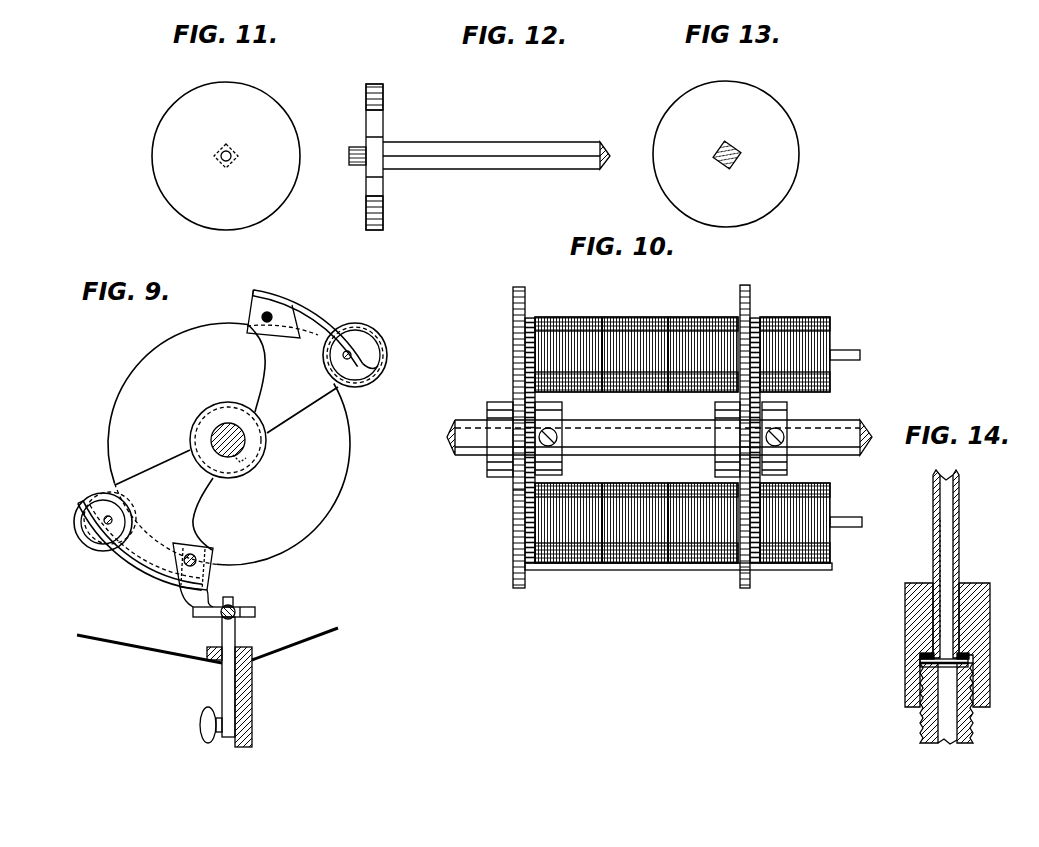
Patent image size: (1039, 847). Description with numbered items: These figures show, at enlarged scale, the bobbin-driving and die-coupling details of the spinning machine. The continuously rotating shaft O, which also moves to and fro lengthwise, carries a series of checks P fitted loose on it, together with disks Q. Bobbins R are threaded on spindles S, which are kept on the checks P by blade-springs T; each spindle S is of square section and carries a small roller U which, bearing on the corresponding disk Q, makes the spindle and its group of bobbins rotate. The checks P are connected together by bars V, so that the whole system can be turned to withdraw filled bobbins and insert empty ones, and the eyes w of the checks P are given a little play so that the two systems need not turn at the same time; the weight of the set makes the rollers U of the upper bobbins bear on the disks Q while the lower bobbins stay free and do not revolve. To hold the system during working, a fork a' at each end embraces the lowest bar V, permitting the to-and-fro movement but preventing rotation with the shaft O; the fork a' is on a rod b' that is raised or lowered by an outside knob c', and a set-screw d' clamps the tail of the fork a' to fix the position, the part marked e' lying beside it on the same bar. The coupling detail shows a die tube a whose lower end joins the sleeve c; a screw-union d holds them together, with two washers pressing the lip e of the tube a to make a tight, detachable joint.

In FIG. 11, the roller U is at (226, 156).
In FIG. 12, the roller U is at (375, 157).
In FIG. 13, the roller U is at (726, 154).
In FIG. 9, the roller U is at (368, 350).
In FIG. 10, the roller U is at (525, 345).
In FIG. 12, the spindle S is at (496, 148).
In FIG. 13, the spindle S is at (730, 163).
In FIG. 9, the spindle S is at (345, 358).
In FIG. 10, the spindle S is at (846, 428).
In FIG. 9, the blade-spring T is at (305, 318).
In FIG. 10, the blade-spring T is at (525, 306).
In FIG. 9, the bar V is at (188, 553).
In FIG. 10, the bar V is at (678, 576).
In FIG. 9, the bobbin R is at (222, 428).
In FIG. 10, the bobbin R is at (682, 428).
In FIG. 9, the shaft O is at (230, 424).
In FIG. 10, the shaft O is at (659, 436).
In FIG. 9, the check P is at (226, 436).
In FIG. 10, the check P is at (618, 541).
In FIG. 9, the disk Q is at (229, 444).
In FIG. 10, the disk Q is at (562, 472).
In FIG. 9, the eye w is at (243, 467).
In FIG. 10, the eye w is at (498, 460).
In FIG. 9, the fork a' is at (215, 612).
In FIG. 9, the rod b' is at (232, 682).
In FIG. 9, the knob c' is at (207, 717).
In FIG. 9, the set-screw d' is at (248, 593).
In FIG. 9, the bar end e' is at (263, 621).
In FIG. 14, the tube a is at (957, 564).
In FIG. 14, the sleeve c is at (933, 705).
In FIG. 14, the screw-union d is at (936, 645).
In FIG. 14, the lip e is at (917, 654).